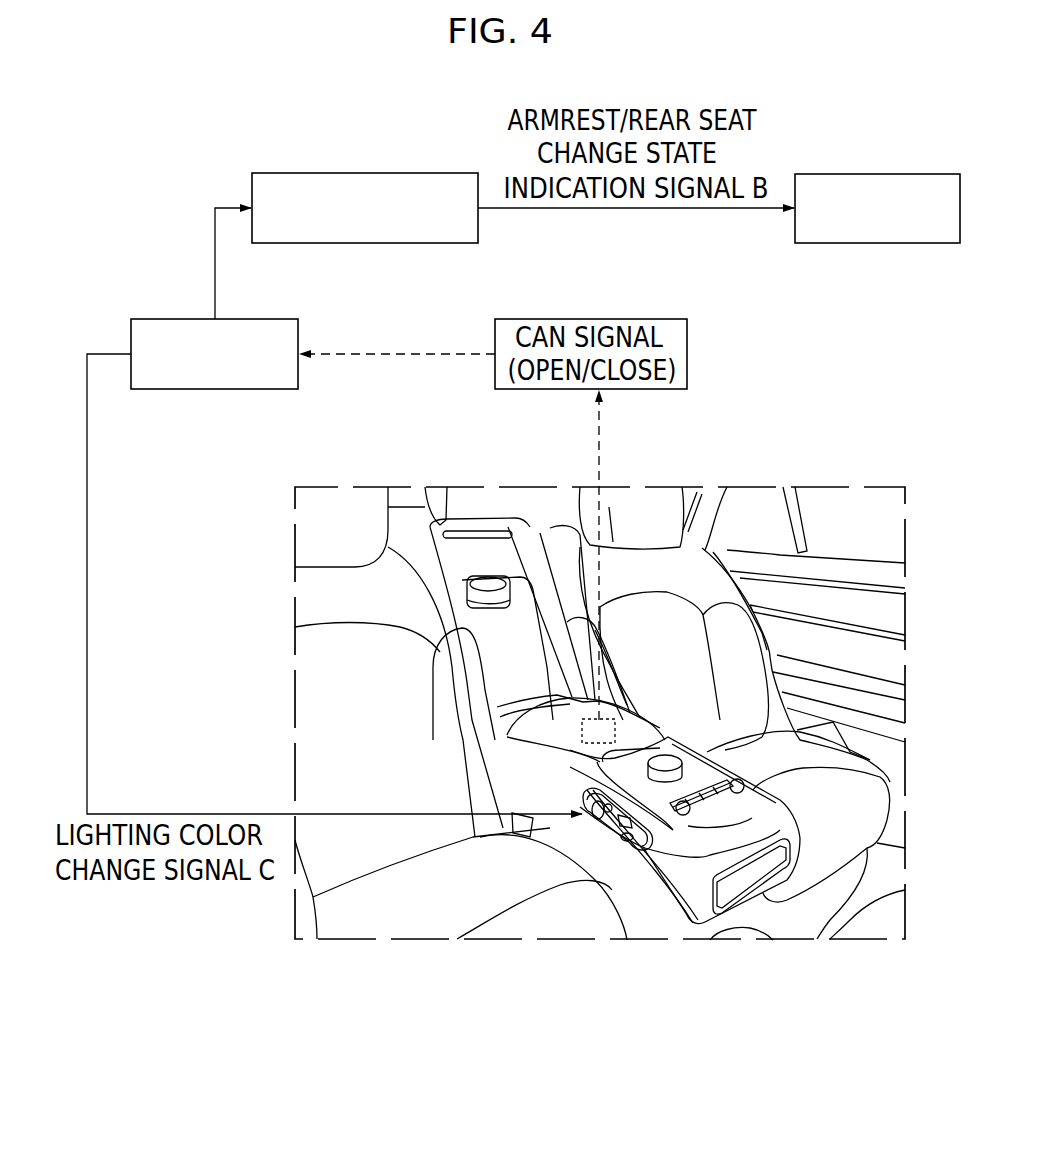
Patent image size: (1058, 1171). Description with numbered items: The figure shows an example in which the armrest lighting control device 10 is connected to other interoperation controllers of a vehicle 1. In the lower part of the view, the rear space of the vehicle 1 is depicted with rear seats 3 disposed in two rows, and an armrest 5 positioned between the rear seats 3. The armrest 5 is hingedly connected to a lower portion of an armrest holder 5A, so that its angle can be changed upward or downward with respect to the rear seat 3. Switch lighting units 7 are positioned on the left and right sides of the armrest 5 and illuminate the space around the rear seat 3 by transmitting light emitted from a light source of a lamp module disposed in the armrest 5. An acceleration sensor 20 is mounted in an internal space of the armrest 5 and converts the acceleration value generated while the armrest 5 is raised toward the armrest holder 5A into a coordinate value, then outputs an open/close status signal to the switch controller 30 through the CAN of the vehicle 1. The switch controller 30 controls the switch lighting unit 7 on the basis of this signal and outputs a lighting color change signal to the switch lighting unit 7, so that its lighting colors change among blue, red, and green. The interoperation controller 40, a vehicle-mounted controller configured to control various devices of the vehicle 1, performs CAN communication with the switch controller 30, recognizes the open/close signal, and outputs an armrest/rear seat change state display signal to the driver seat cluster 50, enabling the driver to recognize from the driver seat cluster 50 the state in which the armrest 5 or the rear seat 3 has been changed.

The vehicle 1 is at (837, 505).
The rear seat 3 is at (333, 636).
The armrest 5 is at (752, 795).
The armrest holder 5A is at (483, 580).
The switch lighting unit 7 is at (645, 835).
The armrest lighting control device 10 is at (70, 240).
The acceleration sensor 20 is at (582, 727).
The switch controller 30 is at (155, 319).
The interoperation controller 40 is at (362, 173).
The driver seat cluster 50 is at (880, 174).